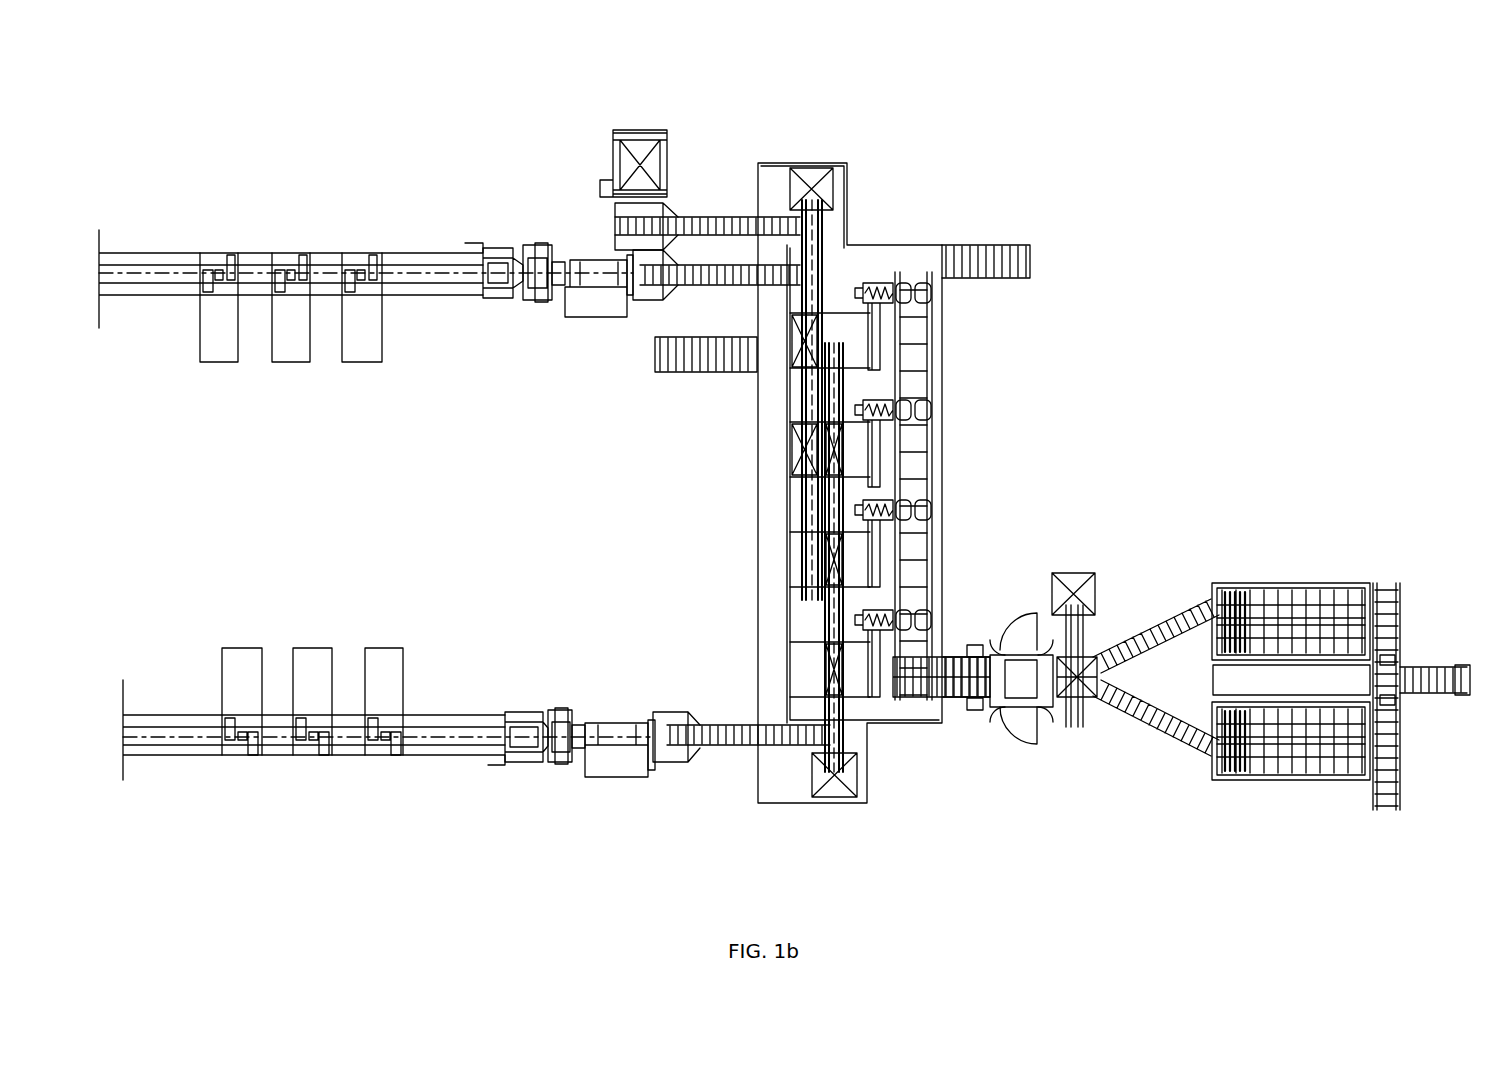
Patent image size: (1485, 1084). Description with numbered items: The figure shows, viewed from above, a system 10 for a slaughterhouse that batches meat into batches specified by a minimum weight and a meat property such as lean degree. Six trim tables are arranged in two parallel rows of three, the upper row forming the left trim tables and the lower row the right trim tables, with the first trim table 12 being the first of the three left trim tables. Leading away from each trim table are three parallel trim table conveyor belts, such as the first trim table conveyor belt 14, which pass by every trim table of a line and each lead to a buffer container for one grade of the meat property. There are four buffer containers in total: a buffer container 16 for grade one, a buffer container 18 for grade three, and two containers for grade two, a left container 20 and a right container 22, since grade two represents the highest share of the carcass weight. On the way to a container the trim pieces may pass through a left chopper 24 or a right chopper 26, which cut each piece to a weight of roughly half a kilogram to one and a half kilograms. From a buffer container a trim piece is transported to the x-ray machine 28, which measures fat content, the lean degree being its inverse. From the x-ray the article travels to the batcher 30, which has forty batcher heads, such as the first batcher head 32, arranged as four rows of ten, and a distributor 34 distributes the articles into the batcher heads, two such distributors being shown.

The system 10 is at (1100, 178).
The first trim table 12 is at (218, 333).
The first trim table conveyor belt 14 is at (402, 262).
The buffer container 16 is at (857, 562).
The buffer container 18 is at (857, 462).
The left container 20 is at (857, 347).
The right container 22 is at (800, 678).
The left chopper 24 is at (597, 302).
The right chopper 26 is at (616, 748).
The x-ray machine 28 is at (1025, 690).
The batcher 30 is at (1360, 590).
The first batcher head 32 is at (1290, 600).
The distributor 34 is at (1237, 592).